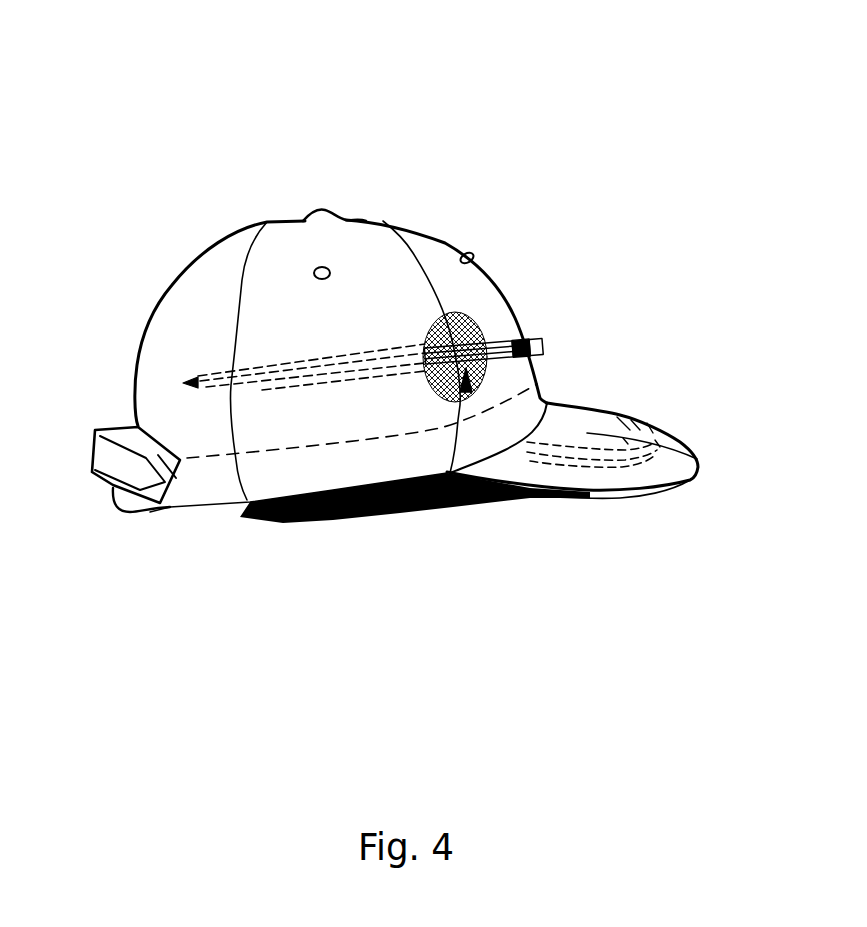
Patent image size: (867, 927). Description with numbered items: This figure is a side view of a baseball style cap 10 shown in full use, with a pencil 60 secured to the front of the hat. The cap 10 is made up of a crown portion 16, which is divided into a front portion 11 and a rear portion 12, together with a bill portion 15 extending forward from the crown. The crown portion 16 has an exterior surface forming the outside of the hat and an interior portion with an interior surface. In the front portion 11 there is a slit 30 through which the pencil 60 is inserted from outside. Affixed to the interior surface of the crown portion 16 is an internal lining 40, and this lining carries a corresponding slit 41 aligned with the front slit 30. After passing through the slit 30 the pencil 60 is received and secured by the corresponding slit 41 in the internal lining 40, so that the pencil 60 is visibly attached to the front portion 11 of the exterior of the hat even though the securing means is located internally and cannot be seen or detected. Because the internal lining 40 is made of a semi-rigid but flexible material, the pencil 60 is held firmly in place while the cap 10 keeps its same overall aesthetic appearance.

The baseball style cap 10 is at (411, 213).
The front portion 11 is at (498, 312).
The rear portion 12 is at (167, 410).
The bill portion 15 is at (698, 467).
The crown portion 16 is at (283, 218).
The slit 30 is at (463, 310).
The internal lining 40 is at (490, 379).
The corresponding slit 41 is at (466, 392).
The pencil 60 is at (545, 347).